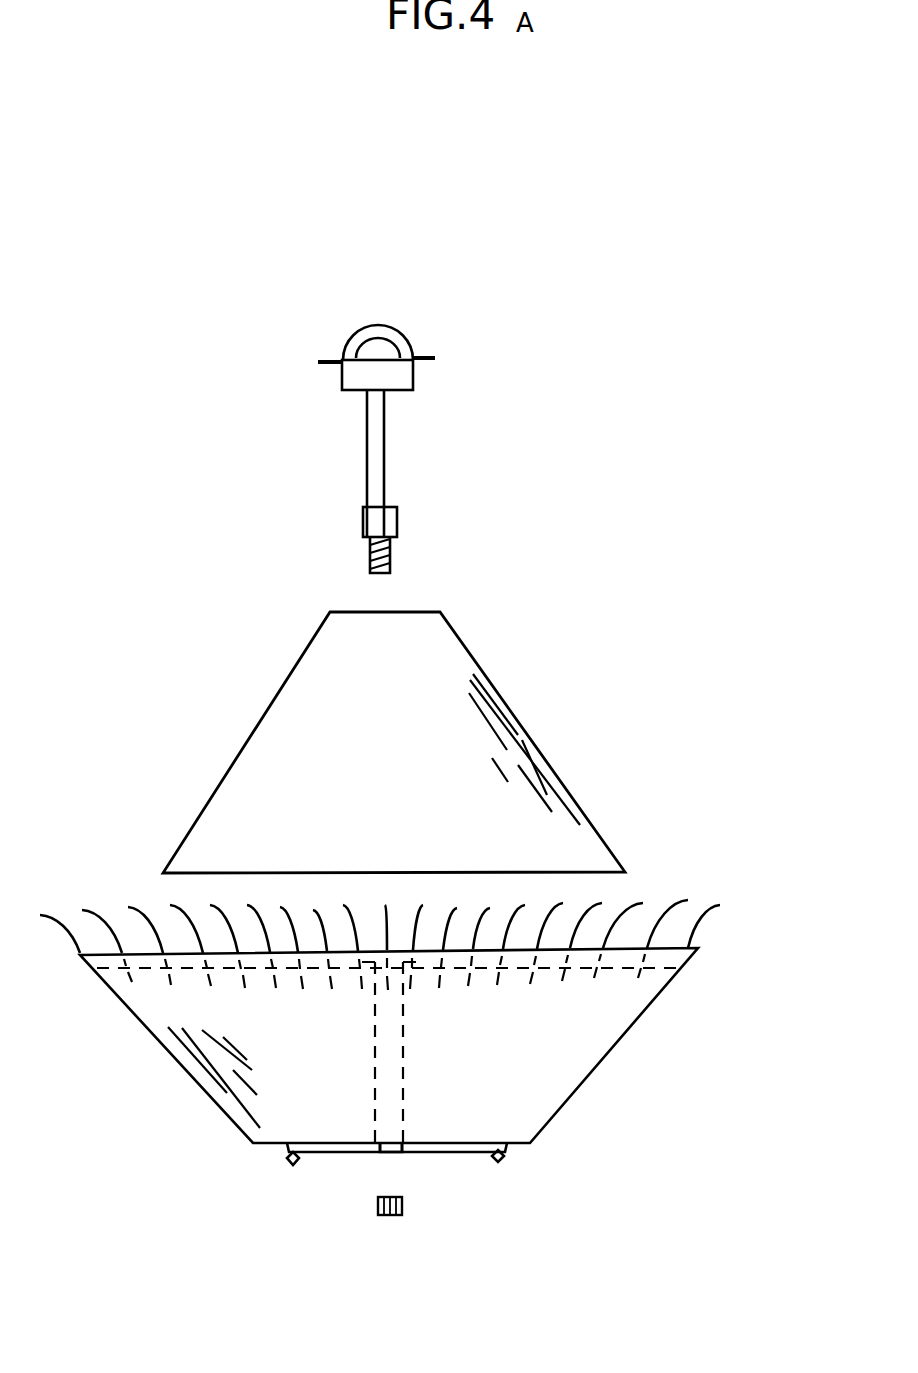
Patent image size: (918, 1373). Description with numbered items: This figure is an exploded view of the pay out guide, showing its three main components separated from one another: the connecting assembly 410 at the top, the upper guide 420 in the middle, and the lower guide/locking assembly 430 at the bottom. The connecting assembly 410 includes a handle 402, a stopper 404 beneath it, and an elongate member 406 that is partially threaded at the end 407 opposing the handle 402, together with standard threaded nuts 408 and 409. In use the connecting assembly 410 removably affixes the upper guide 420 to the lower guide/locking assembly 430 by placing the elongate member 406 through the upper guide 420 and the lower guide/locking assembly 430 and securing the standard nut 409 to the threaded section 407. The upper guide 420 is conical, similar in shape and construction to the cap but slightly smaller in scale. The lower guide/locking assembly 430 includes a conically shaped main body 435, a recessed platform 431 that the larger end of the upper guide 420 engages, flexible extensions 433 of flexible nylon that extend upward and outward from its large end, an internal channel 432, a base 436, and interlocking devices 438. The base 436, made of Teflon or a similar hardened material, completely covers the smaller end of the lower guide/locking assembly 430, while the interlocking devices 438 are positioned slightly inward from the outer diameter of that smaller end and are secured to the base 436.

The handle 402 is at (353, 338).
The stopper 404 is at (340, 380).
The elongate member 406 is at (367, 423).
The threaded section 407 is at (390, 555).
The standard threaded nut 408 is at (363, 523).
The standard threaded nut 409 is at (385, 1215).
The connecting assembly 410 is at (350, 438).
The upper guide 420 is at (395, 773).
The lower guide/locking assembly 430 is at (438, 1052).
The recessed platform 431 is at (678, 970).
The internal channel 432 is at (385, 1150).
The flexible extensions 433 is at (680, 900).
The main body 435 is at (470, 1101).
The base 436 is at (443, 1152).
The interlocking devices 438 is at (288, 1160).